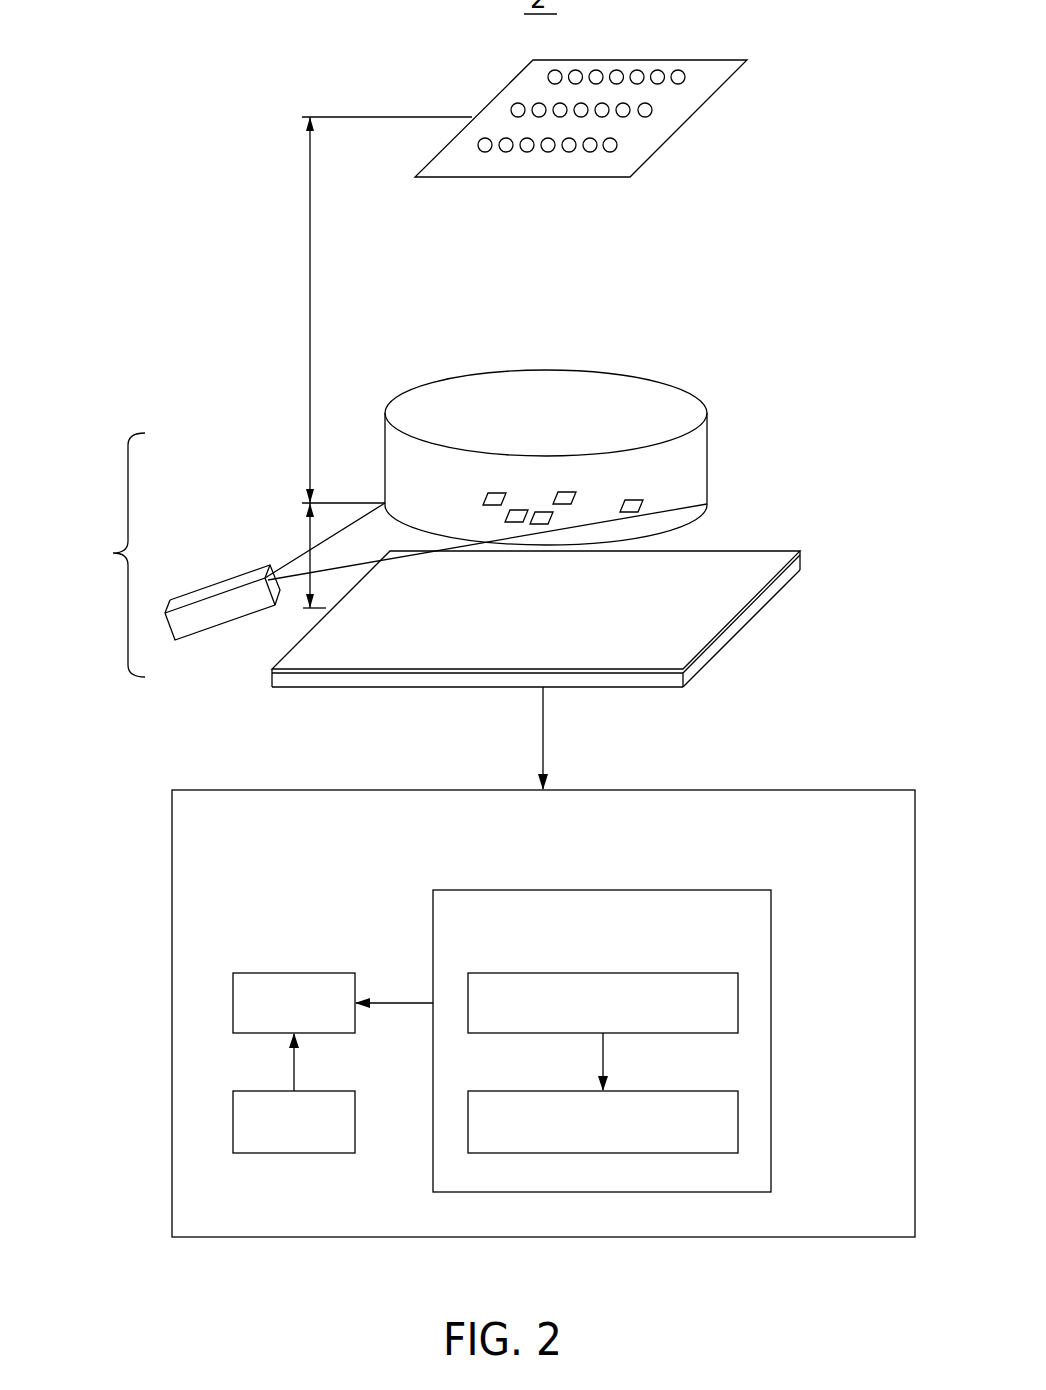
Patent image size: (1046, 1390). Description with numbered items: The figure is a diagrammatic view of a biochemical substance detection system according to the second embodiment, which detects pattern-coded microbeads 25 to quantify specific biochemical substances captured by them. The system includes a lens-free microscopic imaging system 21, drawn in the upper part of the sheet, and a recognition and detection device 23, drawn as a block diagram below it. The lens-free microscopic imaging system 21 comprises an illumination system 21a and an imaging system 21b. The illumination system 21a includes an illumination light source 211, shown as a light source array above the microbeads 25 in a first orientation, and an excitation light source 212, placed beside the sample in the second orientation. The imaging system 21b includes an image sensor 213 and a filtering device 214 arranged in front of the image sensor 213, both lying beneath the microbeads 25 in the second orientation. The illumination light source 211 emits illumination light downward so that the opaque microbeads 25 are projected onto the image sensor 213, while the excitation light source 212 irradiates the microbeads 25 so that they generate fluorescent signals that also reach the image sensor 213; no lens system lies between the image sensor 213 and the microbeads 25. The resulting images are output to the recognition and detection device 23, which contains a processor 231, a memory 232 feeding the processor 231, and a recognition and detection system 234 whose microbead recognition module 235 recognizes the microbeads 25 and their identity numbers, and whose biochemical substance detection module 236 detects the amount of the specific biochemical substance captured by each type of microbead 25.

The lens-free microscopic imaging system 21 is at (486, 407).
The illumination system 21a is at (268, 425).
The imaging system 21b is at (256, 670).
The illumination light source 211 is at (517, 92).
The excitation light source 212 is at (260, 590).
The image sensor 213 is at (762, 603).
The filtering device 214 is at (762, 560).
The microbead 25 is at (630, 506).
The recognition and detection device 23 is at (800, 790).
The processor 231 is at (295, 972).
The memory 232 is at (295, 1153).
The recognition and detection system 234 is at (602, 890).
The microbead recognition module 235 is at (745, 1000).
The biochemical substance detection module 236 is at (742, 1122).